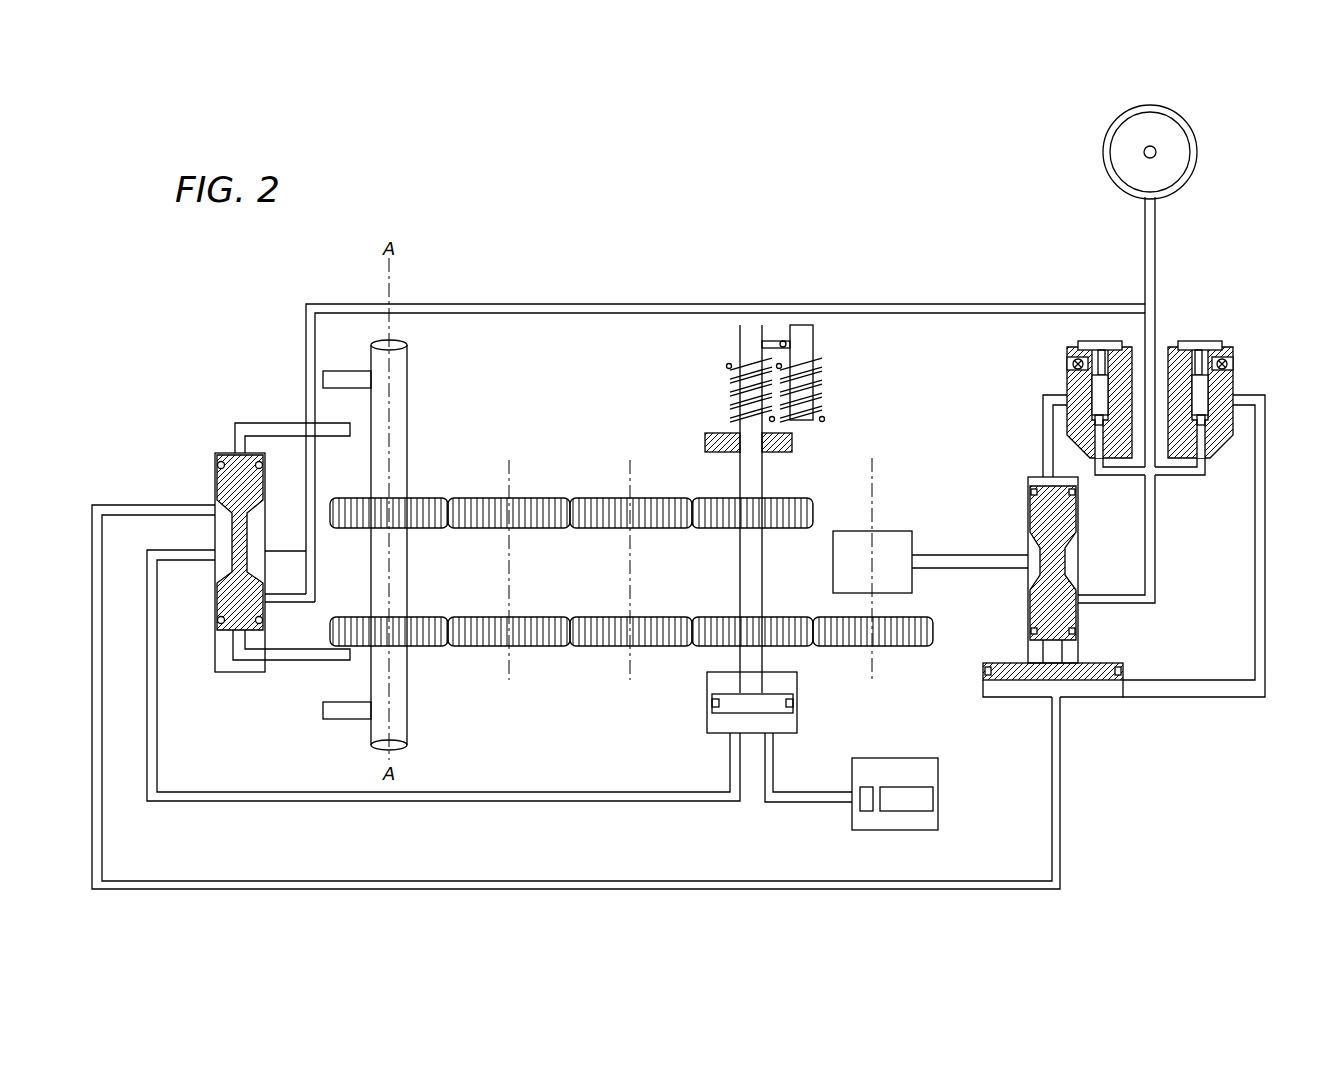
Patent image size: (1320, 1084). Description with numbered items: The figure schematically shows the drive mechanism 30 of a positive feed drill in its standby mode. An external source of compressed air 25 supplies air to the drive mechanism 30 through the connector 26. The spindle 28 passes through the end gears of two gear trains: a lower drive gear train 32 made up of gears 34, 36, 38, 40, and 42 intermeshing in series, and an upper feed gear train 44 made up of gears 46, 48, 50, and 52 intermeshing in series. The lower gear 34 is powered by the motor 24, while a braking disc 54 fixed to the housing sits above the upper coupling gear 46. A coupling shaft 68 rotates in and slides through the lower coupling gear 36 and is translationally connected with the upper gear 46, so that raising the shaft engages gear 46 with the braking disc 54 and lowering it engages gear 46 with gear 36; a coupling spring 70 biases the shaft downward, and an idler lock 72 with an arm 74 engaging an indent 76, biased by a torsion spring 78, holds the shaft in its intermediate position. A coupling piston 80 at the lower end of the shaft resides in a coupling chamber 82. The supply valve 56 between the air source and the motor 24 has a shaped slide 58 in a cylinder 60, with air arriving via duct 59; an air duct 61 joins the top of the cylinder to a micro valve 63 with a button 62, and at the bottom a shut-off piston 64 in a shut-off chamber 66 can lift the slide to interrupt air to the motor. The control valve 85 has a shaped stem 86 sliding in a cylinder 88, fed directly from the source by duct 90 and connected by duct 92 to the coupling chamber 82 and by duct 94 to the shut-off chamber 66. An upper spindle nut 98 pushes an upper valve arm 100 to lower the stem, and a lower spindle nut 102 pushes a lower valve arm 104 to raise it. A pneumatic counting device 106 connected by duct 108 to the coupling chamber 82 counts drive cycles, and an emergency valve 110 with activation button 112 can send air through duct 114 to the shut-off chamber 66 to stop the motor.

The motor 24 is at (890, 530).
The external source of compressed air 25 is at (1198, 150).
The connector 26 is at (1155, 272).
The spindle 28 is at (398, 393).
The drive mechanism 30 is at (578, 215).
The lower gear train 32 is at (537, 682).
The lower gear 34 is at (888, 644).
The lower coupling gear 36 is at (760, 617).
The gear 38 is at (615, 616).
The gear 40 is at (492, 616).
The lower end drive gear 42 is at (425, 616).
The upper gear train 44 is at (541, 470).
The upper coupling gear 46 is at (776, 498).
The gear 48 is at (604, 497).
The gear 50 is at (490, 497).
The upper end feed gear 52 is at (420, 497).
The braking disc 54 is at (705, 440).
The supply valve 56 is at (1027, 597).
The shaped slide 58 is at (1040, 513).
The duct 59 is at (1155, 548).
The cylinder 60 is at (1078, 628).
The air duct 61 is at (1043, 415).
The button 62 is at (1100, 345).
The micro valve 63 is at (1100, 392).
The shut-off piston 64 is at (1020, 690).
The shut-off chamber 66 is at (1078, 697).
The coupling shaft 68 is at (748, 345).
The coupling spring 70 is at (735, 382).
The idler lock 72 is at (808, 342).
The arm 74 is at (783, 341).
The indent 76 is at (767, 341).
The torsion spring 78 is at (822, 392).
The coupling piston 80 is at (720, 705).
The coupling chamber 82 is at (770, 712).
The control valve 85 is at (268, 518).
The shaped stem 86 is at (232, 598).
The cylinder 88 is at (283, 553).
The duct 90 is at (505, 303).
The duct 92 is at (148, 622).
The duct 94 is at (150, 505).
The upper spindle nut 98 is at (345, 370).
The upper valve arm 100 is at (265, 425).
The lower spindle nut 102 is at (330, 720).
The lower valve arm 104 is at (273, 655).
The pneumatic counting device 106 is at (886, 758).
The duct 108 is at (805, 802).
The emergency valve 110 is at (1200, 390).
The activation button 112 is at (1200, 343).
The duct 114 is at (1265, 560).